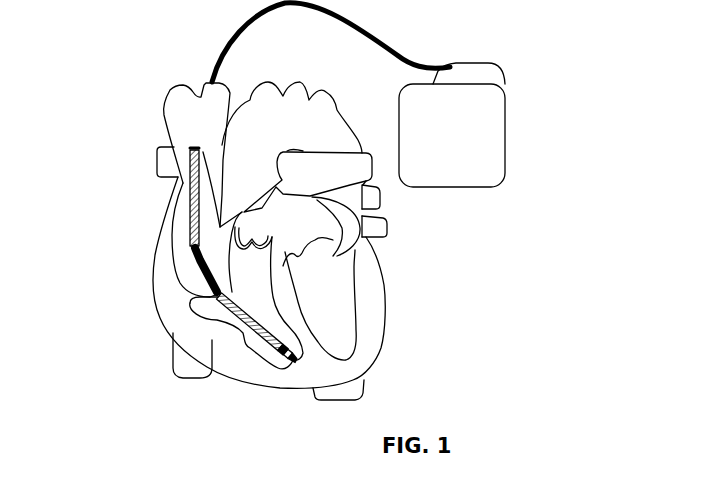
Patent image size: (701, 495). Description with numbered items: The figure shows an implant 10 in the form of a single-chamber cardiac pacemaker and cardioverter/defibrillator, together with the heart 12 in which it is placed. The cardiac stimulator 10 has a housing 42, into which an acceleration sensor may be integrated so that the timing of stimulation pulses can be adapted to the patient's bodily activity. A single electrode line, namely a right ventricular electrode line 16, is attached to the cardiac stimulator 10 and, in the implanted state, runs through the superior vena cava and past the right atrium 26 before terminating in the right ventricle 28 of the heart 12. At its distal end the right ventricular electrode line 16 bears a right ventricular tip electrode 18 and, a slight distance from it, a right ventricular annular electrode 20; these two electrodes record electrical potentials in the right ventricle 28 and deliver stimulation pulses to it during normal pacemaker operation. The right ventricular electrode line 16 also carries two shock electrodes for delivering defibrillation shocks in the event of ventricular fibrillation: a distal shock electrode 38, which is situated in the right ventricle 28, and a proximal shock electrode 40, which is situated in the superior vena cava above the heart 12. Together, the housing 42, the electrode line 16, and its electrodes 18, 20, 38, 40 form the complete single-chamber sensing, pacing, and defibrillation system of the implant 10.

The implant 10 is at (332, 234).
The heart 12 is at (295, 251).
The right ventricular electrode line 16 is at (247, 234).
The right ventricular tip electrode 18 is at (292, 362).
The right ventricular annular electrode 20 is at (284, 351).
The right atrium 26 is at (183, 273).
The right ventricle 28 is at (233, 330).
The distal shock electrode 38 is at (233, 319).
The proximal shock electrode 40 is at (193, 201).
The housing 42 is at (450, 170).